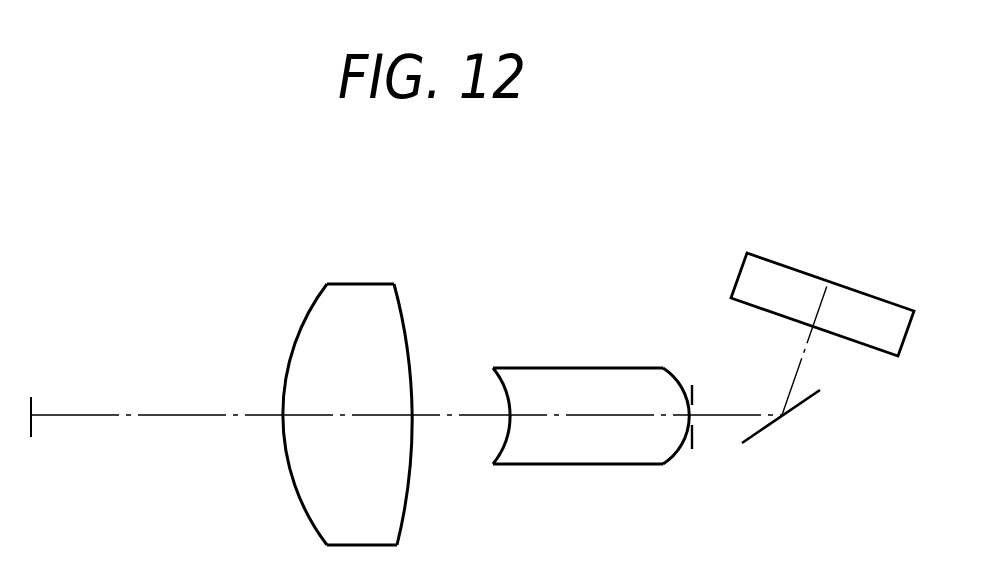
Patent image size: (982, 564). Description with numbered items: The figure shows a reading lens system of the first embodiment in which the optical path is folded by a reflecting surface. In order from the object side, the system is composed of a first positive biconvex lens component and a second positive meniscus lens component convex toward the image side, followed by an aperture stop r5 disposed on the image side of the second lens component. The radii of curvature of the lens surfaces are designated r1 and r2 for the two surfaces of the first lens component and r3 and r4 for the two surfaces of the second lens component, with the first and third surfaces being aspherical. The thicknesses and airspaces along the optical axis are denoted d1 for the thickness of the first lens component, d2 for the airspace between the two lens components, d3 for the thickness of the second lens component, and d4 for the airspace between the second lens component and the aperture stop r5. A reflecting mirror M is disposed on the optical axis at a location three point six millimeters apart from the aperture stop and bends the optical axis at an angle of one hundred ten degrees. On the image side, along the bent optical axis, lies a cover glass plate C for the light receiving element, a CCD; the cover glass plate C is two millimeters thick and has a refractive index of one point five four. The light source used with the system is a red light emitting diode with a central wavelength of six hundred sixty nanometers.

The radius of curvature of first surface r1 is at (310, 307).
The radius of curvature of second surface r2 is at (402, 308).
The radius of curvature of third surface r3 is at (495, 385).
The radius of curvature of fourth surface r4 is at (680, 372).
The aperture stop r5 is at (693, 395).
The thickness of first lens component d1 is at (338, 420).
The airspace between first and second lens components d2 is at (448, 420).
The thickness of second lens component d3 is at (580, 418).
The airspace between second lens component and aperture stop d4 is at (693, 420).
The reflecting mirror M is at (808, 400).
The cover glass plate C is at (905, 338).